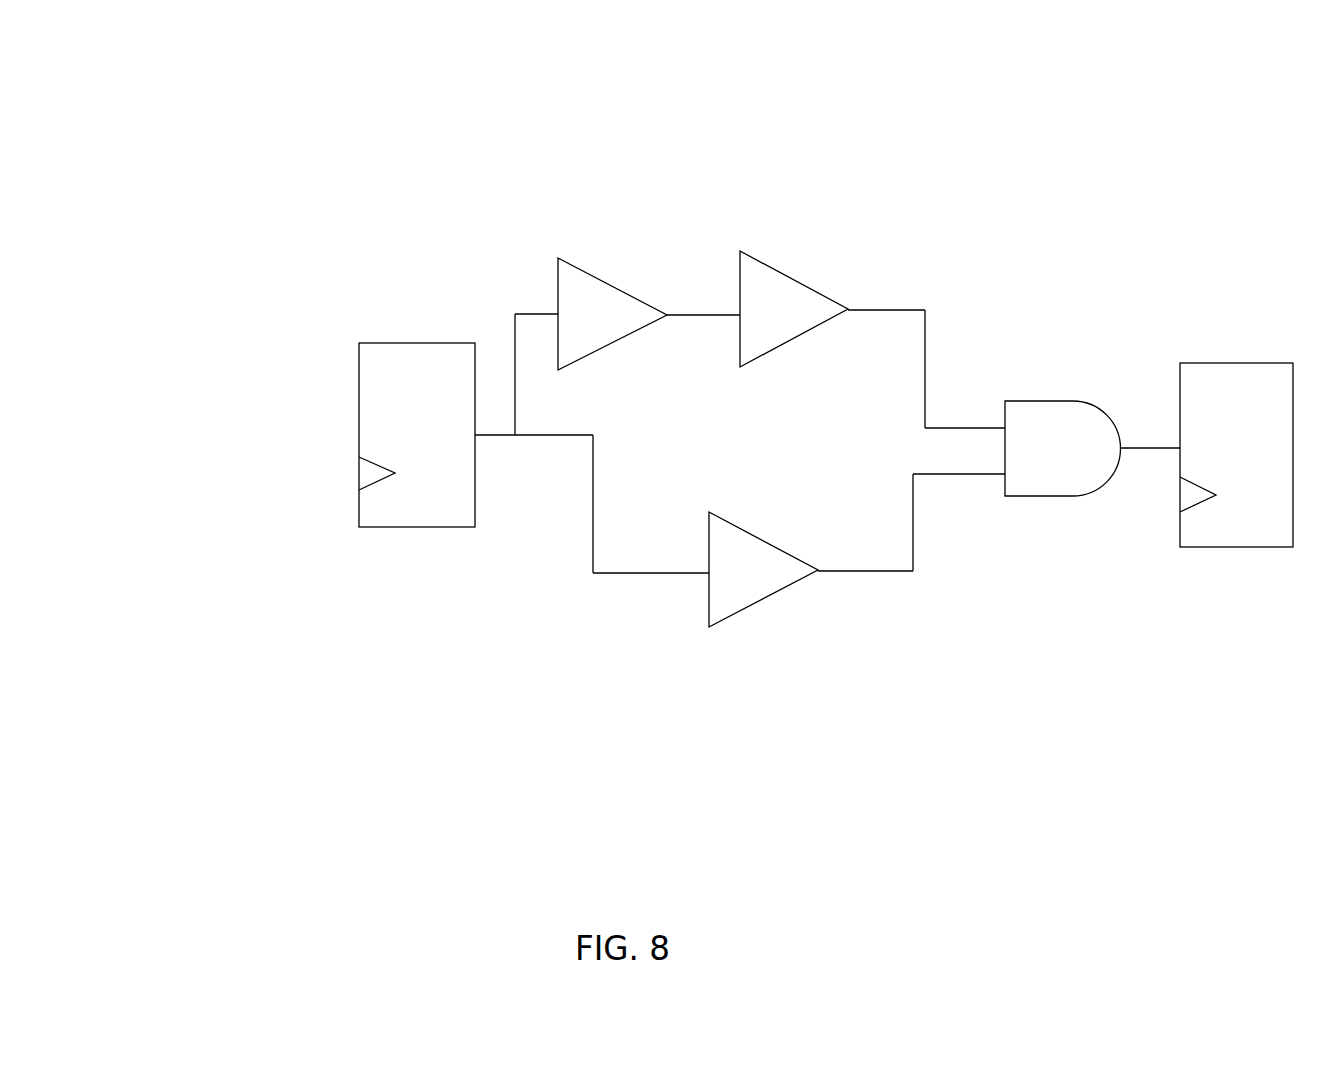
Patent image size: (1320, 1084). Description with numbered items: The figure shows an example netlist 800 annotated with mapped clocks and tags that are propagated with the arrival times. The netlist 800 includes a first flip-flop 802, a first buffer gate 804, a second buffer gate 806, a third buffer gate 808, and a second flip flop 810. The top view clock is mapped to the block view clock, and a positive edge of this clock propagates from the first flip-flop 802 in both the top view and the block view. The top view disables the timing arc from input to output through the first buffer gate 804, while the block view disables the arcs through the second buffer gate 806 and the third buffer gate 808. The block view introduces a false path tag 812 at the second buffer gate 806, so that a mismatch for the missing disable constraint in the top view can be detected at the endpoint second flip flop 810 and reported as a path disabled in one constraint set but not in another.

The netlist 800 is at (1048, 93).
The flip-flop 802 is at (422, 343).
The buffer gate 804 is at (566, 262).
The buffer gate 806 is at (769, 350).
The buffer gate 808 is at (720, 622).
The flip flop 810 is at (1183, 548).
The false path tag 812 is at (698, 205).